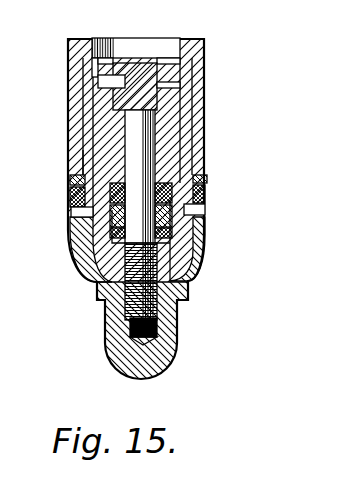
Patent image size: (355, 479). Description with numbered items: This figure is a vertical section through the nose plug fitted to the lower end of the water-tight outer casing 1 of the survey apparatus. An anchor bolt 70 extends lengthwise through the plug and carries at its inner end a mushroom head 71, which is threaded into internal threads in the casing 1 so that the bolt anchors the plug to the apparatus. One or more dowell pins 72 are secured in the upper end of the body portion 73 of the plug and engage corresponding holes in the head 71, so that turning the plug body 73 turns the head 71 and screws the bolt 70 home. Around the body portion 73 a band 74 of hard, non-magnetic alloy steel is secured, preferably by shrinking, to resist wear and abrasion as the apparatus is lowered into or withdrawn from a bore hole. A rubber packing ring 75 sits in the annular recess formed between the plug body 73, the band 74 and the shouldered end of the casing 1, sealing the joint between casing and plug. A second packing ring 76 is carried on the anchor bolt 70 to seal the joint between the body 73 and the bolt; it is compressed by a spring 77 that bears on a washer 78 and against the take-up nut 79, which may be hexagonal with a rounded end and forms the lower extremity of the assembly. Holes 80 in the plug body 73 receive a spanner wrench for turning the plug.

The outer casing 1 is at (206, 112).
The anchor bolt 70 is at (138, 152).
The mushroom head 71 is at (152, 44).
The dowell pins 72 is at (88, 76).
The body portion of the plug 73 is at (85, 147).
The band 74 is at (83, 250).
The packing ring 75 is at (72, 183).
The packing ring 76 is at (206, 193).
The spring 77 is at (177, 232).
The washer 78 is at (190, 223).
The take-up nut 79 is at (178, 345).
The holes 80 is at (72, 212).